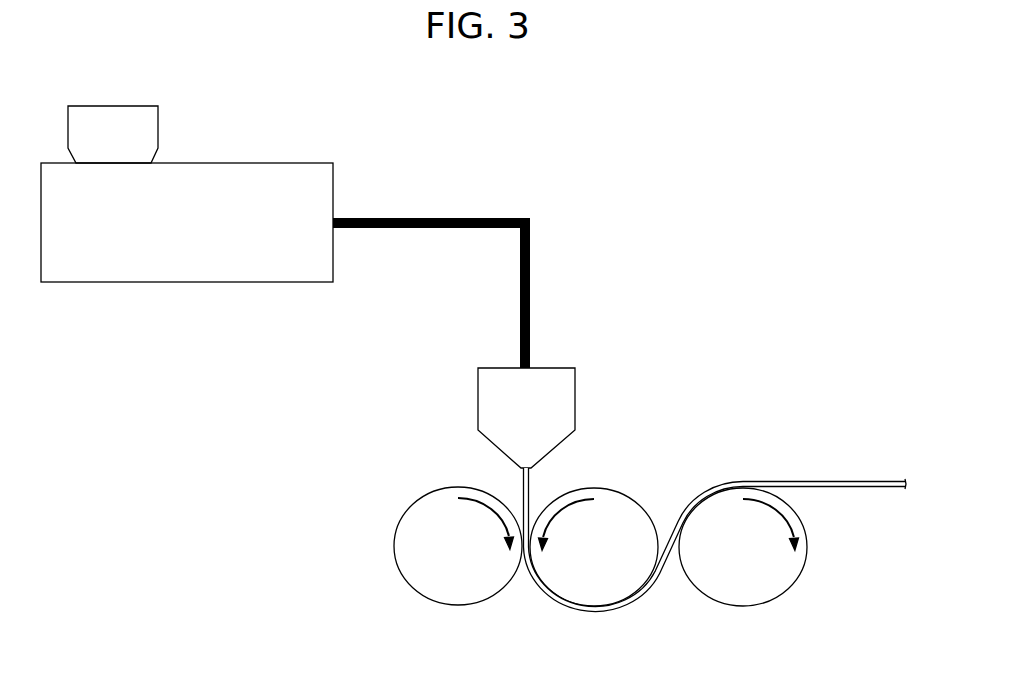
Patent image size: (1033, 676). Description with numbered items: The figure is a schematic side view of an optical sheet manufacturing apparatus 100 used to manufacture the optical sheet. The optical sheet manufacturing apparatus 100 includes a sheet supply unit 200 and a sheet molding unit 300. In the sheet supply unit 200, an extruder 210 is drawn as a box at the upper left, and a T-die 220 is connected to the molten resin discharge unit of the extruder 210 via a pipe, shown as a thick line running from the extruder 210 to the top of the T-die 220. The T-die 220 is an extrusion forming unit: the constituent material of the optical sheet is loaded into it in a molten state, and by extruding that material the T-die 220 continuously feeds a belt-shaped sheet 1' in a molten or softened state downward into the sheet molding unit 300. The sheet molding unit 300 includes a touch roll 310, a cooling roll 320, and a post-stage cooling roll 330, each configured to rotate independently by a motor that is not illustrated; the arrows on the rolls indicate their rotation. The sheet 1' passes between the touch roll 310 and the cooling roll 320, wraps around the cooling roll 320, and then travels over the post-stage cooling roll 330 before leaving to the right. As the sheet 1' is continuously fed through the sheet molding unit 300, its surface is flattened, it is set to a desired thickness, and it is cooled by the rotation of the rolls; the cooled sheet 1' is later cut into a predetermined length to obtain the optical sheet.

The optical sheet manufacturing apparatus 100 is at (712, 130).
The sheet supply unit 200 is at (477, 160).
The extruder 210 is at (254, 163).
The T-die 220 is at (478, 400).
The sheet molding unit 300 is at (865, 398).
The touch roll 310 is at (398, 525).
The cooling roll 320 is at (610, 488).
The post-stage cooling roll 330 is at (740, 606).
The belt-shaped sheet 1' is at (716, 538).